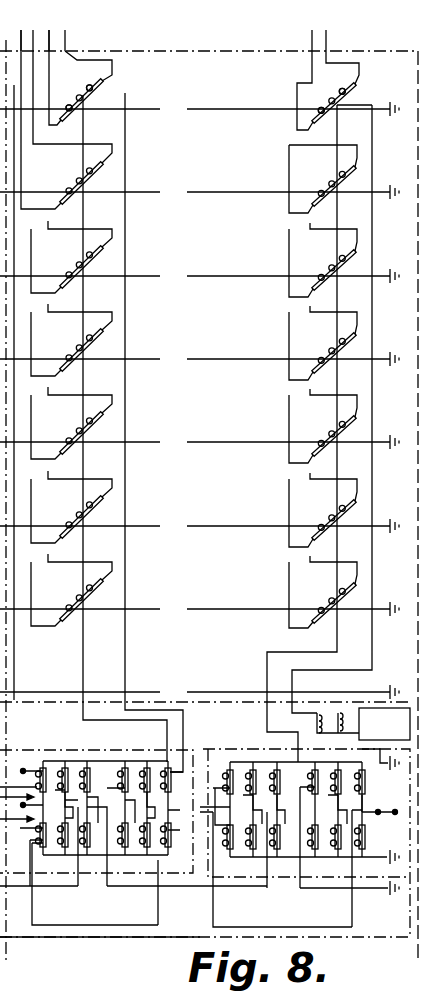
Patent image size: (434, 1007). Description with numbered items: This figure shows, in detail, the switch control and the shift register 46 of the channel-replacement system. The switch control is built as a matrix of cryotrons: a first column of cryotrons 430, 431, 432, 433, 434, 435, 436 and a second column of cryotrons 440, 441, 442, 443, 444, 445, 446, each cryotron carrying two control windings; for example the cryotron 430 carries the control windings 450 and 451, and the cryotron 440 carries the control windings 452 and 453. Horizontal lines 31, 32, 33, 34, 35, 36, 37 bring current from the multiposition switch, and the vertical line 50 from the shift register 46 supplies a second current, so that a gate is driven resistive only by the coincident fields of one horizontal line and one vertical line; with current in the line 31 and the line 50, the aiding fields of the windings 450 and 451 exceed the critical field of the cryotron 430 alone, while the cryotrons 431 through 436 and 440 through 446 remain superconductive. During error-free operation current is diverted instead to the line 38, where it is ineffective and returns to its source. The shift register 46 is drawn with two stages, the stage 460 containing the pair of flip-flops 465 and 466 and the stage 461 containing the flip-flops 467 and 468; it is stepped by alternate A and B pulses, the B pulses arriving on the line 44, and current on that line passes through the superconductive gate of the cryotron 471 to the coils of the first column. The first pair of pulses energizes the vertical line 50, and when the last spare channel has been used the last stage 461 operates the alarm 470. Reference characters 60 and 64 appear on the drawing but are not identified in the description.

The horizontal line 31 is at (236, 110).
The horizontal line 32 is at (236, 193).
The horizontal line 33 is at (236, 277).
The horizontal line 34 is at (236, 360).
The horizontal line 35 is at (236, 443).
The horizontal line 36 is at (236, 527).
The horizontal line 37 is at (236, 610).
The line 38 is at (227, 684).
The line 44 is at (30, 951).
The shift register 46 is at (80, 938).
The vertical line 50 is at (82, 652).
The counter input conductors 60 is at (50, 56).
The reset input conductors 64 is at (323, 52).
The cryotron 430 is at (112, 82).
The cryotron 431 is at (98, 182).
The cryotron 432 is at (98, 266).
The cryotron 433 is at (98, 349).
The cryotron 434 is at (98, 432).
The cryotron 435 is at (98, 516).
The cryotron 436 is at (98, 599).
The cryotron 440 is at (356, 101).
The cryotron 441 is at (356, 184).
The cryotron 442 is at (356, 268).
The cryotron 443 is at (356, 351).
The cryotron 444 is at (356, 434).
The cryotron 445 is at (356, 518).
The cryotron 446 is at (356, 601).
The control winding 450 is at (68, 114).
The control winding 451 is at (100, 90).
The control winding 452 is at (312, 128).
The control winding 453 is at (333, 93).
The stage 460 is at (133, 820).
The stage 461 is at (299, 822).
The flip-flop 465 is at (90, 753).
The flip-flop 466 is at (168, 753).
The flip-flop 467 is at (280, 758).
The flip-flop 468 is at (367, 864).
The alarm 470 is at (368, 710).
The cryotron 471 is at (184, 801).